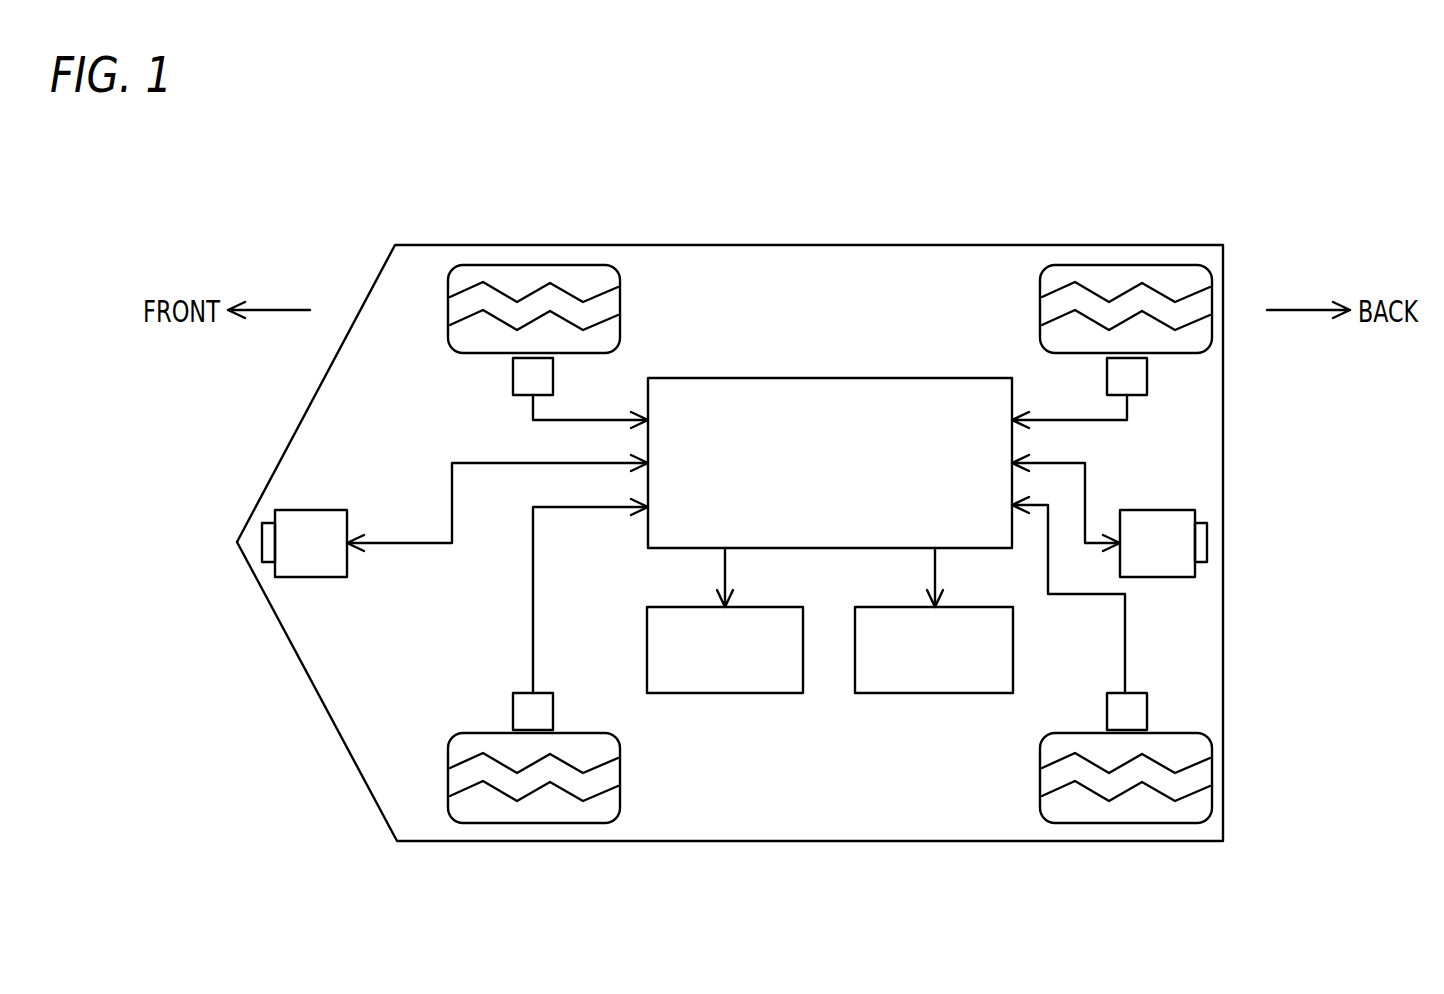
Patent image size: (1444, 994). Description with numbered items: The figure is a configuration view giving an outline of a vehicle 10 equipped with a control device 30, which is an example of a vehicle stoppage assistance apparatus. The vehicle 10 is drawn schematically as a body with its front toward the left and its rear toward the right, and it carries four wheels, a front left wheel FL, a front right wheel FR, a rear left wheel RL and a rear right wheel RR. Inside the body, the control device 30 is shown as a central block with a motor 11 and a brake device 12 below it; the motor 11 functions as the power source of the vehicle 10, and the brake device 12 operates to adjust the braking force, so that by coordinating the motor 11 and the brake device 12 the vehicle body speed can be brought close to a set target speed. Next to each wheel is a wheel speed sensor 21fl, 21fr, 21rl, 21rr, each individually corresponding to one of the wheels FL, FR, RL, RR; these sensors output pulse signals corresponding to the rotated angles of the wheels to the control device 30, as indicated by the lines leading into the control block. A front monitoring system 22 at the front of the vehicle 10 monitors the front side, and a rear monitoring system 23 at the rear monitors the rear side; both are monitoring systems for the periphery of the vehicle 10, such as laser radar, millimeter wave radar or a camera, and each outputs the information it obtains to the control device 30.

The vehicle 10 is at (862, 245).
The motor 11 is at (722, 693).
The brake device 12 is at (932, 693).
The wheel speed sensor 21fr is at (513, 376).
The wheel speed sensor 21fl is at (512, 703).
The wheel speed sensor 21rr is at (1147, 376).
The wheel speed sensor 21rl is at (1147, 708).
The front monitoring system 22 is at (305, 577).
The rear monitoring system 23 is at (1163, 510).
The control device 30 is at (847, 378).
The front right wheel FR is at (521, 265).
The front left wheel FL is at (525, 823).
The rear right wheel RR is at (1114, 265).
The rear left wheel RL is at (1118, 823).